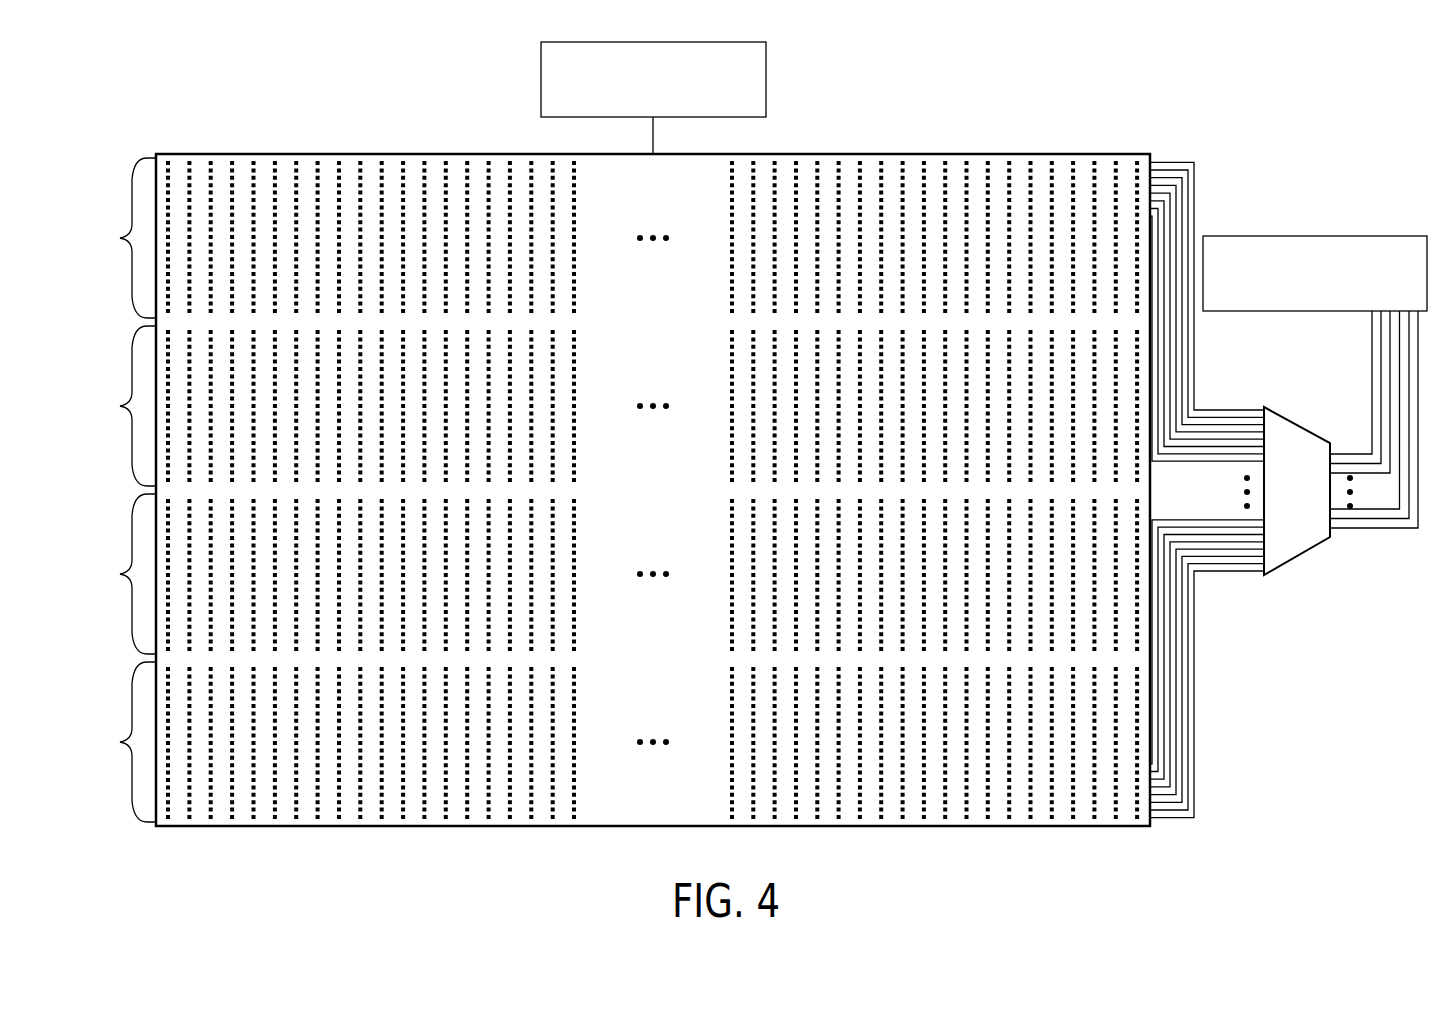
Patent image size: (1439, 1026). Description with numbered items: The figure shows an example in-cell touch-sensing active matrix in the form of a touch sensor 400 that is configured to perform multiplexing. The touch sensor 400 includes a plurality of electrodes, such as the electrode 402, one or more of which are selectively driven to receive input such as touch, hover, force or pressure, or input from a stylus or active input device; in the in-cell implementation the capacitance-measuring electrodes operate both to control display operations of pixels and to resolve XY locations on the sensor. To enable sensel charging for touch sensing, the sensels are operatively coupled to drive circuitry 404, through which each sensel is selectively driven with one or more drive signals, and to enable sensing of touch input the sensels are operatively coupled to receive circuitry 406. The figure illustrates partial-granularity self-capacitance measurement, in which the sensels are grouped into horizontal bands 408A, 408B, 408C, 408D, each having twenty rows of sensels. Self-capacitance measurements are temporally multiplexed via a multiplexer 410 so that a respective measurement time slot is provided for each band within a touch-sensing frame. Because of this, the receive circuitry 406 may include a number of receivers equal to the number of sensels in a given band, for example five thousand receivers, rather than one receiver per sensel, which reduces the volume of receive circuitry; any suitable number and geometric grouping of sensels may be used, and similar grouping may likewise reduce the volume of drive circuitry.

The touch sensor 400 is at (920, 58).
The electrode 402 is at (275, 160).
The drive circuitry 404 is at (669, 106).
The receive circuitry 406 is at (1331, 298).
The horizontal band 408A is at (597, 238).
The horizontal band 408B is at (597, 406).
The horizontal band 408C is at (597, 574).
The horizontal band 408D is at (597, 742).
The multiplexer 410 is at (1313, 518).